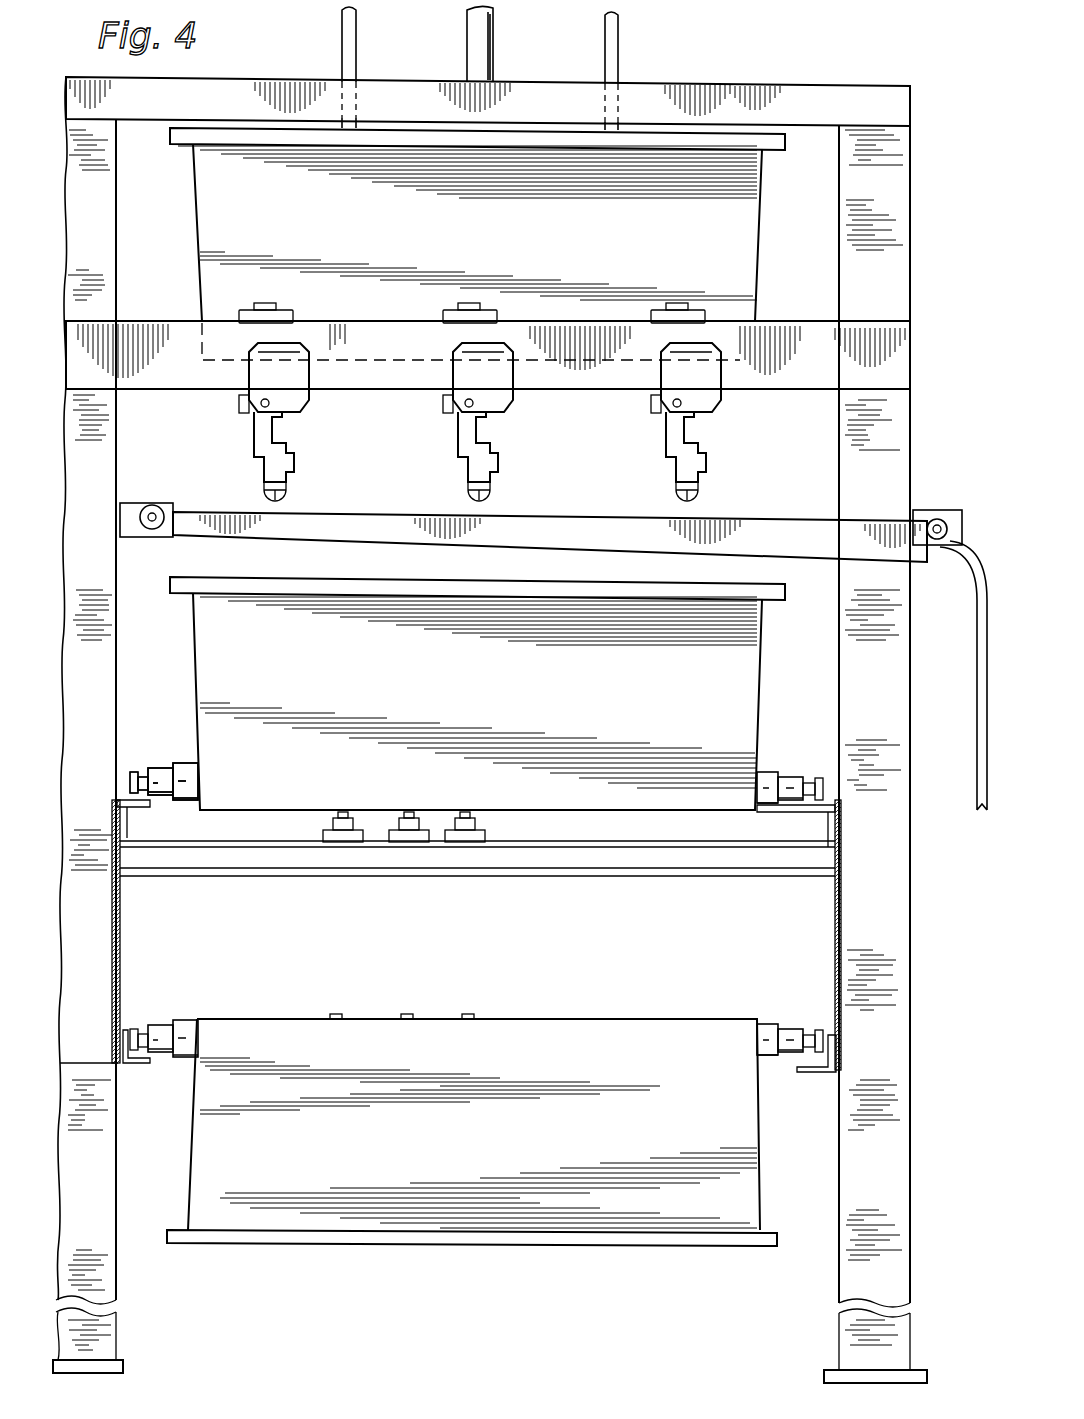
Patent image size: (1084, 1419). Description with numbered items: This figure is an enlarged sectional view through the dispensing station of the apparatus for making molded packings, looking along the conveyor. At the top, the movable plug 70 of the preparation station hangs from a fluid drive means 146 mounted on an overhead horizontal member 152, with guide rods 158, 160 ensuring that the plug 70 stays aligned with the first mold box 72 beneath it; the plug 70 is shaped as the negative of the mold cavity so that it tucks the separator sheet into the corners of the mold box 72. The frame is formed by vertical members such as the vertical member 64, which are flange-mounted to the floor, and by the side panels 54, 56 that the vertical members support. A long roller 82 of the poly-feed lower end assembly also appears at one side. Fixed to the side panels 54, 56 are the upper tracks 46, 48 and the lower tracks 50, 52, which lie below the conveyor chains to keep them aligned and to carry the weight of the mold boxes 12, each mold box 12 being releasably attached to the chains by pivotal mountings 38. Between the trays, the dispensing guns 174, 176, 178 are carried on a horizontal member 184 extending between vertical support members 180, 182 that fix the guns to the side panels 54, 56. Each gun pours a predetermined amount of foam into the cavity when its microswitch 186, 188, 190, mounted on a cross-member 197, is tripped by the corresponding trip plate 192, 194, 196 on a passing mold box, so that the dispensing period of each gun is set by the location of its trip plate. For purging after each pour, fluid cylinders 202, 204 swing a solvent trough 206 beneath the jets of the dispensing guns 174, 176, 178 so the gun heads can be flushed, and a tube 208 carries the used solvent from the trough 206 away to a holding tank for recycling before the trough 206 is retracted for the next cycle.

The mold box 12 is at (773, 1207).
The pivotal mounting 38 is at (186, 762).
The upper track 46 is at (822, 802).
The upper track 48 is at (128, 790).
The lower track 50 is at (810, 1074).
The lower track 52 is at (126, 1066).
The side panel 54 is at (835, 928).
The side panel 56 is at (120, 952).
The vertical member 64 is at (118, 1292).
The movable plug 70 is at (194, 212).
The first mold box 72 is at (478, 696).
The roller 82 is at (912, 1200).
The fluid drive means 146 is at (467, 48).
The top beam 152 is at (698, 82).
The guide rod 158 is at (605, 52).
The guide rod 160 is at (342, 40).
The dispensing gun 174 is at (720, 420).
The dispensing gun 176 is at (512, 418).
The dispensing gun 178 is at (305, 418).
The vertical support member 180 is at (888, 885).
The vertical support member 182 is at (118, 436).
The horizontal member 184 is at (148, 319).
The microswitch 186 is at (486, 840).
The microswitch 188 is at (392, 832).
The microswitch 190 is at (323, 838).
The trip plate 192 is at (472, 1014).
The trip plate 194 is at (410, 1014).
The trip plate 196 is at (337, 1014).
The cross-member 197 is at (272, 858).
The fluid cylinder 202 is at (153, 506).
The fluid cylinder 204 is at (936, 520).
The solvent trough 206 is at (393, 512).
The tube 208 is at (974, 590).